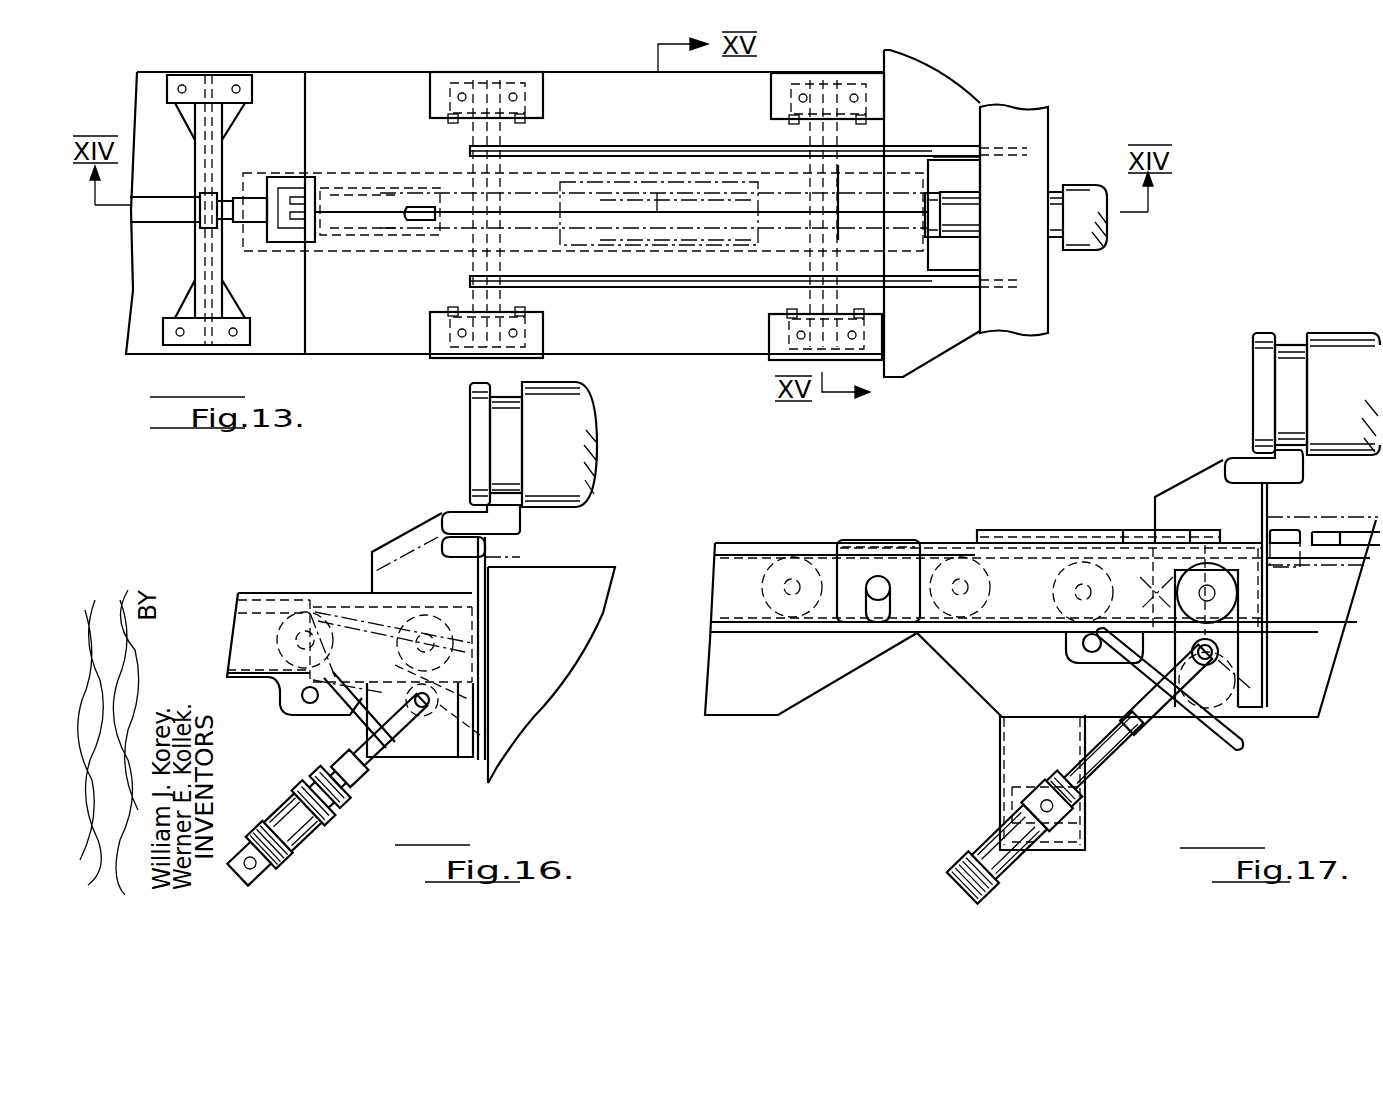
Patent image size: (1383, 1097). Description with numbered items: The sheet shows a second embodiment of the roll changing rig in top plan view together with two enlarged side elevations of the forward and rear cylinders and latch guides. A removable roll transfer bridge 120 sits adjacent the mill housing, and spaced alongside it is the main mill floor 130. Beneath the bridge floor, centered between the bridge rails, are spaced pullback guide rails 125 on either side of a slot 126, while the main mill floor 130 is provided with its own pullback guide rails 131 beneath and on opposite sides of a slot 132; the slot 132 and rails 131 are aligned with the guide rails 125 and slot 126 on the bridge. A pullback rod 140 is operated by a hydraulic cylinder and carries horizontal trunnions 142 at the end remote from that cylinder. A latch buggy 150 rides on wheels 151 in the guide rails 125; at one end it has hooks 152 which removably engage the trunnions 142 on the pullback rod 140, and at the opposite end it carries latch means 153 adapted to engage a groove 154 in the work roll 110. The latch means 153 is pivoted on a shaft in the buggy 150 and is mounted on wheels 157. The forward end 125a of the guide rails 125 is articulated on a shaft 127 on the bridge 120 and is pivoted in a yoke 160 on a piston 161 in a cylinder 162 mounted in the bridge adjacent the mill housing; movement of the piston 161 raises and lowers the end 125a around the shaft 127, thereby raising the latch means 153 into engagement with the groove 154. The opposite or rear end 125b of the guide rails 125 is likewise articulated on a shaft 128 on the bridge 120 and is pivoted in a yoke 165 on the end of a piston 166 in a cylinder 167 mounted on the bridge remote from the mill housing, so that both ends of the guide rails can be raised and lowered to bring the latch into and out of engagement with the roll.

In FIG. 13, the work roll 110 is at (1080, 185).
In FIG. 17, the work roll 110 is at (1352, 402).
In FIG. 13, the removable roll transfer bridge 120 is at (697, 326).
In FIG. 17, the removable roll transfer bridge 120 is at (1000, 756).
In FIG. 13, the pullback guide rails 125 is at (977, 188).
In FIG. 16, the forward end of guide rails 125a is at (465, 705).
In FIG. 17, the rear end of guide rails 125b is at (1238, 737).
In FIG. 13, the slot 126 is at (440, 205).
In FIG. 16, the shaft 127 is at (310, 704).
In FIG. 17, the shaft 128 is at (1086, 650).
In FIG. 13, the main mill floor 130 is at (283, 84).
In FIG. 13, the pullback guide rails 131 is at (590, 225).
In FIG. 13, the slot 132 is at (527, 210).
In FIG. 17, the pullback rod 140 is at (755, 600).
In FIG. 17, the horizontal trunnions 142 is at (878, 600).
In FIG. 17, the latch buggy 150 is at (945, 560).
In FIG. 16, the wheels 151 is at (282, 686).
In FIG. 17, the wheels 151 is at (1082, 590).
In FIG. 17, the hooks 152 is at (850, 575).
In FIG. 16, the latch means 153 is at (505, 517).
In FIG. 17, the latch means 153 is at (1285, 470).
In FIG. 16, the groove 154 is at (497, 437).
In FIG. 17, the groove 154 is at (1290, 346).
In FIG. 16, the wheels 157 is at (470, 618).
In FIG. 17, the wheels 157 is at (1266, 720).
In FIG. 16, the yoke 160 is at (363, 764).
In FIG. 16, the piston 161 is at (332, 770).
In FIG. 16, the cylinder 162 is at (292, 838).
In FIG. 17, the yoke 165 is at (1140, 702).
In FIG. 17, the piston 166 is at (1117, 752).
In FIG. 17, the cylinder 167 is at (975, 855).